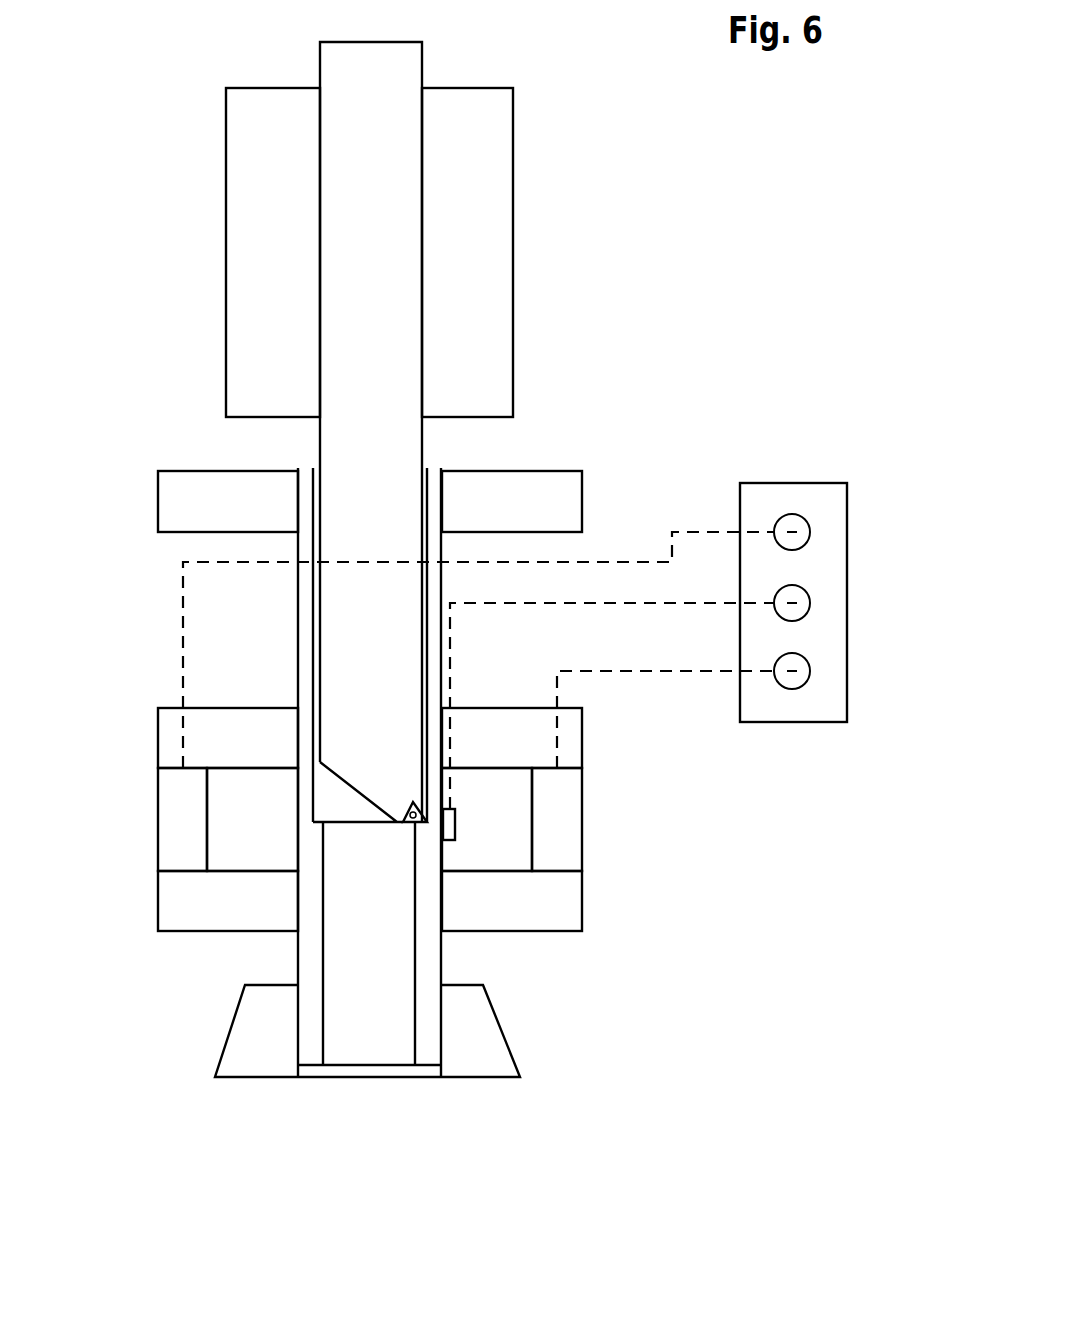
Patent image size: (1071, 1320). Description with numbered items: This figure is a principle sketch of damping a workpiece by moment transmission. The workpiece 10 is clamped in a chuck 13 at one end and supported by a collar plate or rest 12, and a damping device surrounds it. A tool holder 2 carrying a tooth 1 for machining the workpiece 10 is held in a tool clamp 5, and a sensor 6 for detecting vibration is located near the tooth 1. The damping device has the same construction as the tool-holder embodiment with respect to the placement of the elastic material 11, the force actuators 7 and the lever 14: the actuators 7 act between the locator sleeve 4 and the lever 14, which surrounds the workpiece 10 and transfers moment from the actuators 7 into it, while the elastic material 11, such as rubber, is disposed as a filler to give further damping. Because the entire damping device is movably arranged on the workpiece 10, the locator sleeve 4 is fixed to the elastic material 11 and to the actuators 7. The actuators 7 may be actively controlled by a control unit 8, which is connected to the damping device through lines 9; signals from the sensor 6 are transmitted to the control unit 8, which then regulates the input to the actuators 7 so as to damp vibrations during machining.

The tooth 1 is at (486, 929).
The tool holder 2 is at (314, 432).
The locator sleeve 4 is at (317, 720).
The tool clamp 5 is at (290, 252).
The sensor 6 is at (577, 869).
The actuators 7 is at (303, 891).
The control unit 8 is at (837, 602).
The lines 9 is at (478, 672).
The workpiece 10 is at (374, 1003).
The elastic material 11 is at (306, 917).
The collar plate or rest 12 is at (313, 483).
The chuck 13 is at (328, 1076).
The lever 14 is at (406, 975).